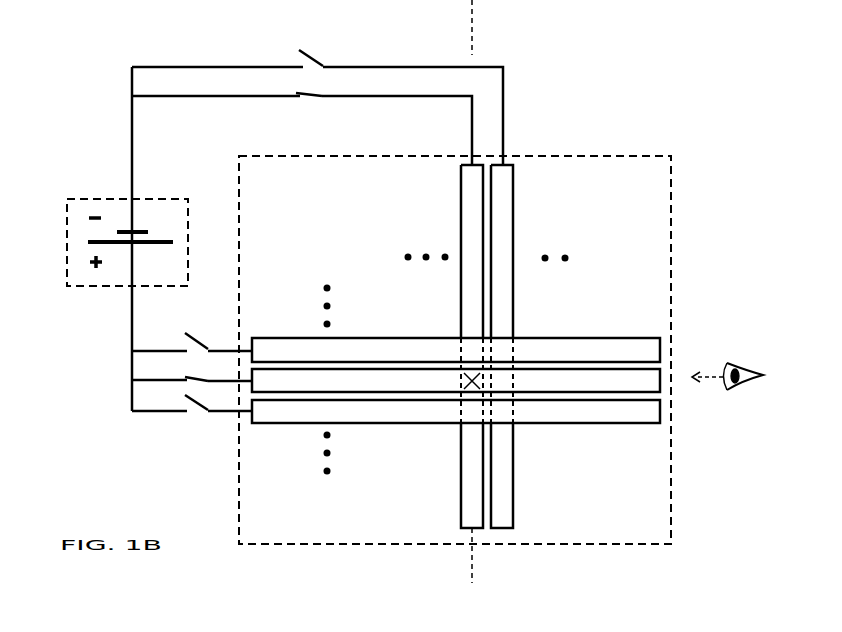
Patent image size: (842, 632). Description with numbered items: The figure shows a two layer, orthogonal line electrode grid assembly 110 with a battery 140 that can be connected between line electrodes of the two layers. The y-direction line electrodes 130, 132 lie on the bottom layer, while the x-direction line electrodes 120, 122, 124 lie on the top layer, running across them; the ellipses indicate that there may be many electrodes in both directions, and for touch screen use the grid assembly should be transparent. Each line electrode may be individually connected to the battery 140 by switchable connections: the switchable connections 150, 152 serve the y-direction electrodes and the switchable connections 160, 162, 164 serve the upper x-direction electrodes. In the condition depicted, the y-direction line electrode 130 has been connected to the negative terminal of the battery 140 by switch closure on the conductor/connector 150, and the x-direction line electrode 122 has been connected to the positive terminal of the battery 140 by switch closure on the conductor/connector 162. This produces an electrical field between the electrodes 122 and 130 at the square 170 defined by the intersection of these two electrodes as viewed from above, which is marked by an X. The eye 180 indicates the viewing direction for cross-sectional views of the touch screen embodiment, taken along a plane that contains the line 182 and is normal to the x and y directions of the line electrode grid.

The line electrode grid assembly 110 is at (597, 156).
The x-direction line electrode 120 is at (540, 337).
The x-direction line electrode 122 is at (572, 368).
The x-direction line electrode 124 is at (587, 423).
The y-direction line electrode 130 is at (461, 220).
The y-direction line electrode 132 is at (514, 218).
The battery 140 is at (85, 198).
The switchable connection 150 is at (350, 97).
The switchable connection 152 is at (350, 66).
The switchable connection 160 is at (221, 348).
The switchable connection 162 is at (185, 378).
The switchable connection 164 is at (178, 413).
The square 170 is at (463, 381).
The eye 180 is at (729, 381).
The line 182 is at (473, 40).